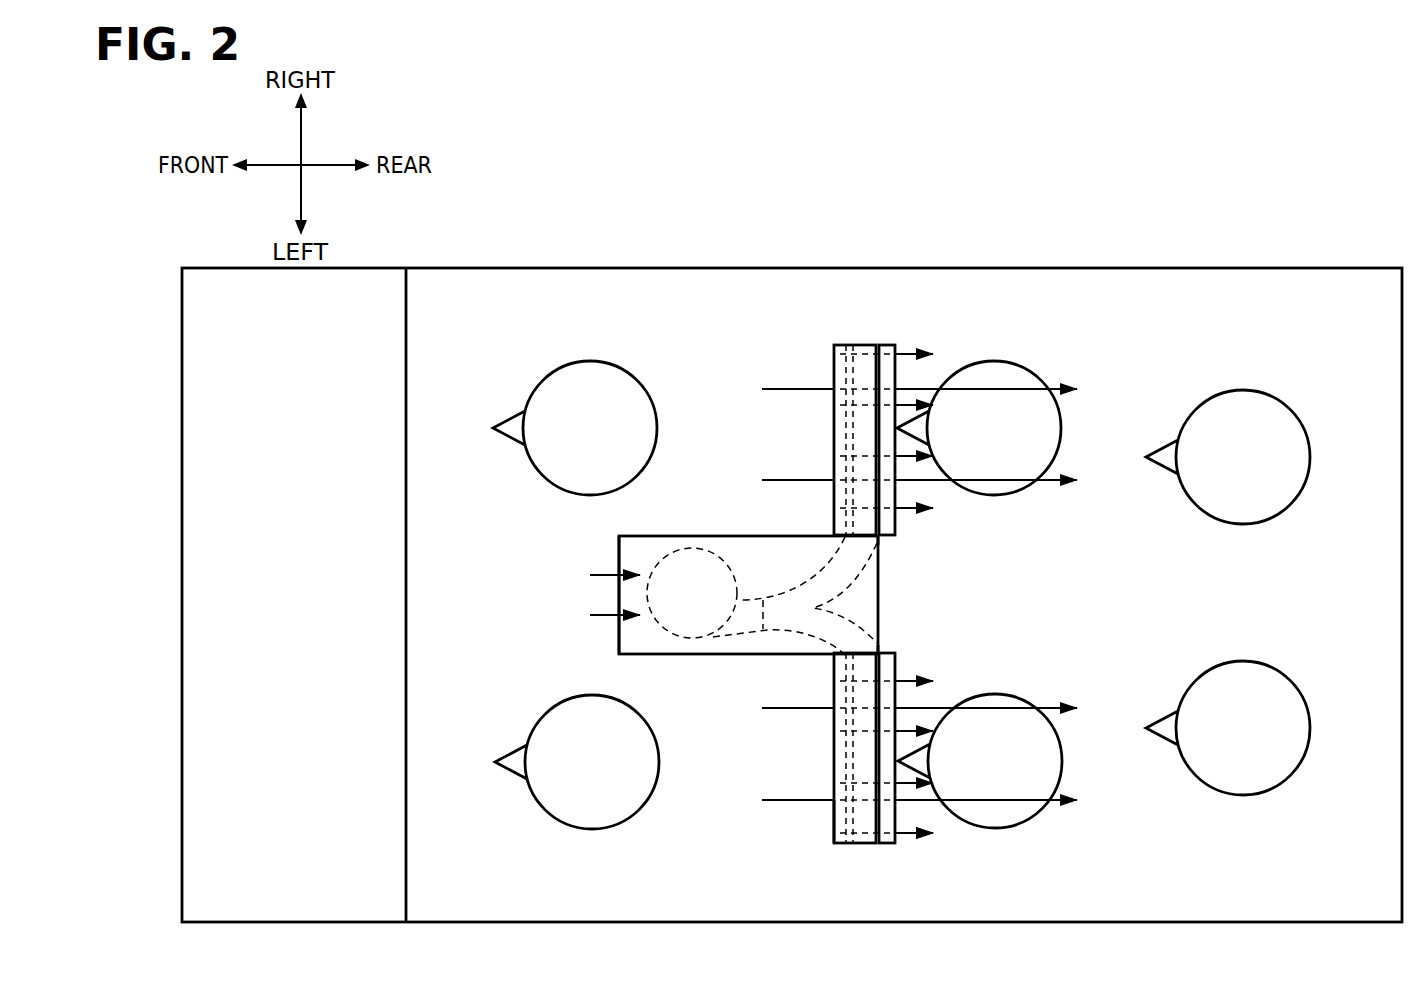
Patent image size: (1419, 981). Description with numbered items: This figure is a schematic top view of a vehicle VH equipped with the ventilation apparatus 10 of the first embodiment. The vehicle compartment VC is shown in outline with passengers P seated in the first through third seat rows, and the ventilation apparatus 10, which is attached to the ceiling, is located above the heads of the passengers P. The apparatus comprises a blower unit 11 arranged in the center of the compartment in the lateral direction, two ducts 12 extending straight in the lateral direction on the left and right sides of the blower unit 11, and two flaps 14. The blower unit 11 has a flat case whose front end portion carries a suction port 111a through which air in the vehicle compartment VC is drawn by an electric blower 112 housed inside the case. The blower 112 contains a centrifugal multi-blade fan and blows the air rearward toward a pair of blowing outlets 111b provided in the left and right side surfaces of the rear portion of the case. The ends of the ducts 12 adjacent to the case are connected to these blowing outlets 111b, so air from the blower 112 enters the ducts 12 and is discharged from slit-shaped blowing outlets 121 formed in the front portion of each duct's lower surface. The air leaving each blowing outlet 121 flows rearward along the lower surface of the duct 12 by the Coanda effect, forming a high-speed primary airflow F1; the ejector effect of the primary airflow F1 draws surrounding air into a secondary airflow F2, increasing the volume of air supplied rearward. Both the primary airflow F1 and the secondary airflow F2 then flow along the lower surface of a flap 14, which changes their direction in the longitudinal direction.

The ventilation apparatus 10 is at (773, 325).
The blower unit 11 is at (600, 640).
The duct 12 is at (819, 536).
The flap 14 is at (888, 343).
The suction port 111a is at (618, 557).
The blowing outlet 111b is at (838, 530).
The blower 112 is at (678, 640).
The blowing outlet 121 is at (838, 815).
The vehicle VH is at (505, 252).
The vehicle compartment VC is at (486, 338).
The passenger P is at (590, 361).
The primary airflow F1 is at (915, 513).
The secondary airflow F2 is at (1044, 483).